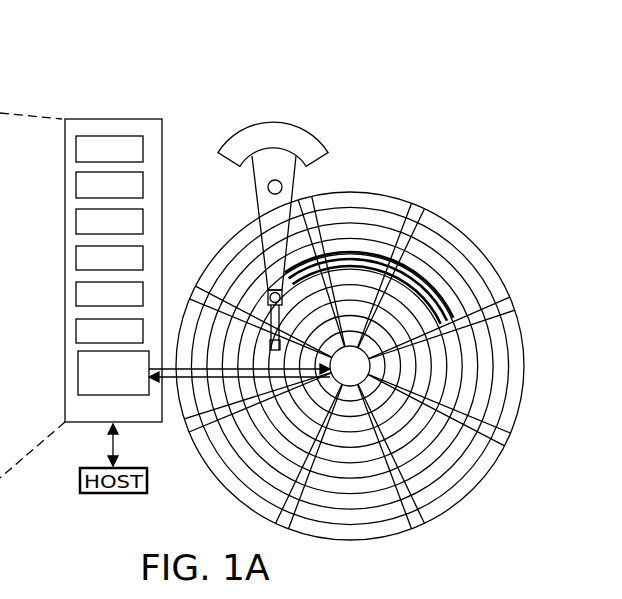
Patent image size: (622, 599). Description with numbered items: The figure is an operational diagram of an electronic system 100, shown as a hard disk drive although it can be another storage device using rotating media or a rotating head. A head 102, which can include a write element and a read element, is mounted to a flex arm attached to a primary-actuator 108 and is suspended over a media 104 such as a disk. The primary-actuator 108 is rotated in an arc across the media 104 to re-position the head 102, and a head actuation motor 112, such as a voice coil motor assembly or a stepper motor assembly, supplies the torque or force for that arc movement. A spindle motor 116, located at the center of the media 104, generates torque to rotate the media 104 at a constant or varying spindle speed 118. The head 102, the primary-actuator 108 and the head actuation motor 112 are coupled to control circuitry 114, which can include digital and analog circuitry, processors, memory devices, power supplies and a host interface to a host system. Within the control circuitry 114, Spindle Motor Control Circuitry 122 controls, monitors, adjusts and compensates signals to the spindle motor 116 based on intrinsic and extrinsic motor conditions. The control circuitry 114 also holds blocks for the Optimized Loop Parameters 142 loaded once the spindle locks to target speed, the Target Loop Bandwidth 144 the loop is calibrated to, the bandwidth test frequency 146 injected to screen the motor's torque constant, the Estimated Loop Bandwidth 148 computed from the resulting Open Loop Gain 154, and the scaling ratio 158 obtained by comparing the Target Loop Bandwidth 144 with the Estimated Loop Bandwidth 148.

The electronic system 100 is at (458, 40).
The head 102 is at (457, 229).
The media 104 is at (294, 274).
The primary-actuator 108 is at (282, 186).
The head actuation motor 112 is at (273, 144).
The control circuitry 114 is at (157, 122).
The spindle motor 116 is at (452, 335).
The spindle speed 118 is at (338, 258).
The Spindle Motor Control Circuitry 122 is at (113, 373).
The Optimized Loop Parameters 142 is at (77, 288).
The Target Loop Bandwidth 144 is at (77, 251).
The bandwidth test frequency 146 is at (77, 142).
The Estimated Loop Bandwidth 148 is at (77, 178).
The Open Loop Gain 154 is at (77, 215).
The scaling ratio 158 is at (77, 325).